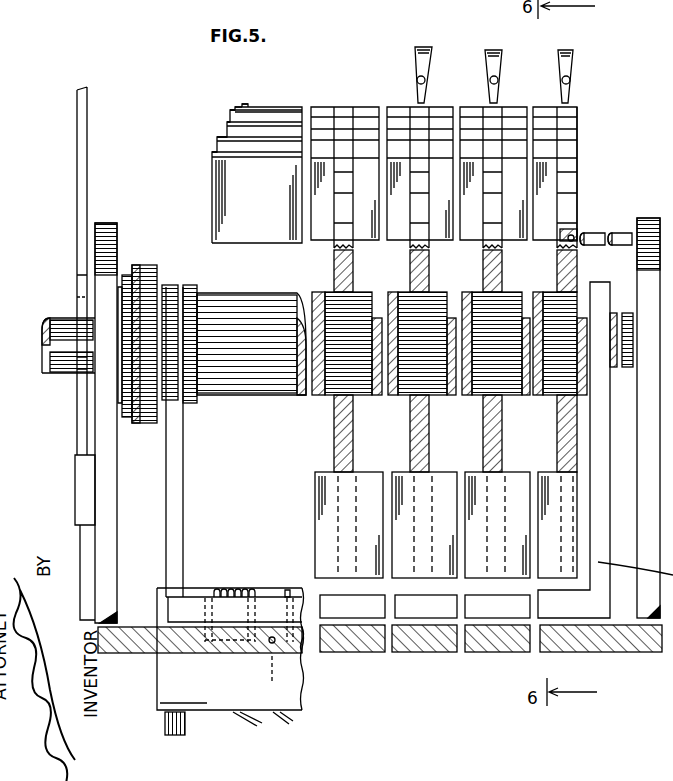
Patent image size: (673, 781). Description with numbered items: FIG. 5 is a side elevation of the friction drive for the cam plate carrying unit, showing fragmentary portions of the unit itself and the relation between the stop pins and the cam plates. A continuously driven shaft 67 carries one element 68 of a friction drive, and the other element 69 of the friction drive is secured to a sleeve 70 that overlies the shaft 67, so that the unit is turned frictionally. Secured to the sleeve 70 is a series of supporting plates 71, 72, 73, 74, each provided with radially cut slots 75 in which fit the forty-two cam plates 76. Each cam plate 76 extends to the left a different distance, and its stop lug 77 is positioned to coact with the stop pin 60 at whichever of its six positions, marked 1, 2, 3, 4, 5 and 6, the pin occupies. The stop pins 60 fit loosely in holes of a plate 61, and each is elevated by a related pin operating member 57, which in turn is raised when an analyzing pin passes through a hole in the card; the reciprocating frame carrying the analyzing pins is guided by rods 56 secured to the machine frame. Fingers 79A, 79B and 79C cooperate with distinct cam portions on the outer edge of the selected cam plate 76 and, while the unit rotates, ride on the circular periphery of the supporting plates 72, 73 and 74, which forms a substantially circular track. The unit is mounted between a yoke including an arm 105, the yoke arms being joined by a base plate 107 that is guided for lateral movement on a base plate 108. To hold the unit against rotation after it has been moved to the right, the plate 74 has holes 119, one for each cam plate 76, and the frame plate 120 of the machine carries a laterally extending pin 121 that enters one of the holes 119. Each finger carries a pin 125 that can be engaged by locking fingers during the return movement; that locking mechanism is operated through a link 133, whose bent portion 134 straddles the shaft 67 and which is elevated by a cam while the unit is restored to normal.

The step contact position 1 is at (249, 339).
The step contact position 2 is at (242, 341).
The step contact position 3 is at (232, 345).
The step contact position 4 is at (223, 351).
The step contact position 5 is at (218, 357).
The step contact position 6 is at (211, 366).
The rods 56 is at (165, 730).
The pin operating member 57 is at (285, 715).
The stop pin 60 is at (290, 592).
The plate 61 is at (274, 670).
The shaft 67 is at (65, 363).
The friction drive element 68 is at (127, 272).
The friction drive element 69 is at (138, 283).
The sleeve 70 is at (238, 368).
The supporting plate 71 is at (337, 440).
The supporting plate 72 is at (412, 447).
The supporting plate 73 is at (485, 447).
The supporting plate 74 is at (557, 447).
The radially cut slots 75 is at (343, 224).
The cam plates 76 is at (285, 137).
The stop lugs 77 is at (210, 153).
The finger 79A is at (487, 55).
The finger 79B is at (418, 58).
The finger 79C is at (573, 57).
The arm 105 is at (177, 524).
The base plate 107 is at (410, 605).
The base plate 108 is at (430, 638).
The holes 119 is at (577, 233).
The frame plate 120 is at (643, 230).
The pin 121 is at (612, 235).
The pin 125 is at (416, 80).
The link 133 is at (90, 555).
The bent portion 134 is at (85, 380).